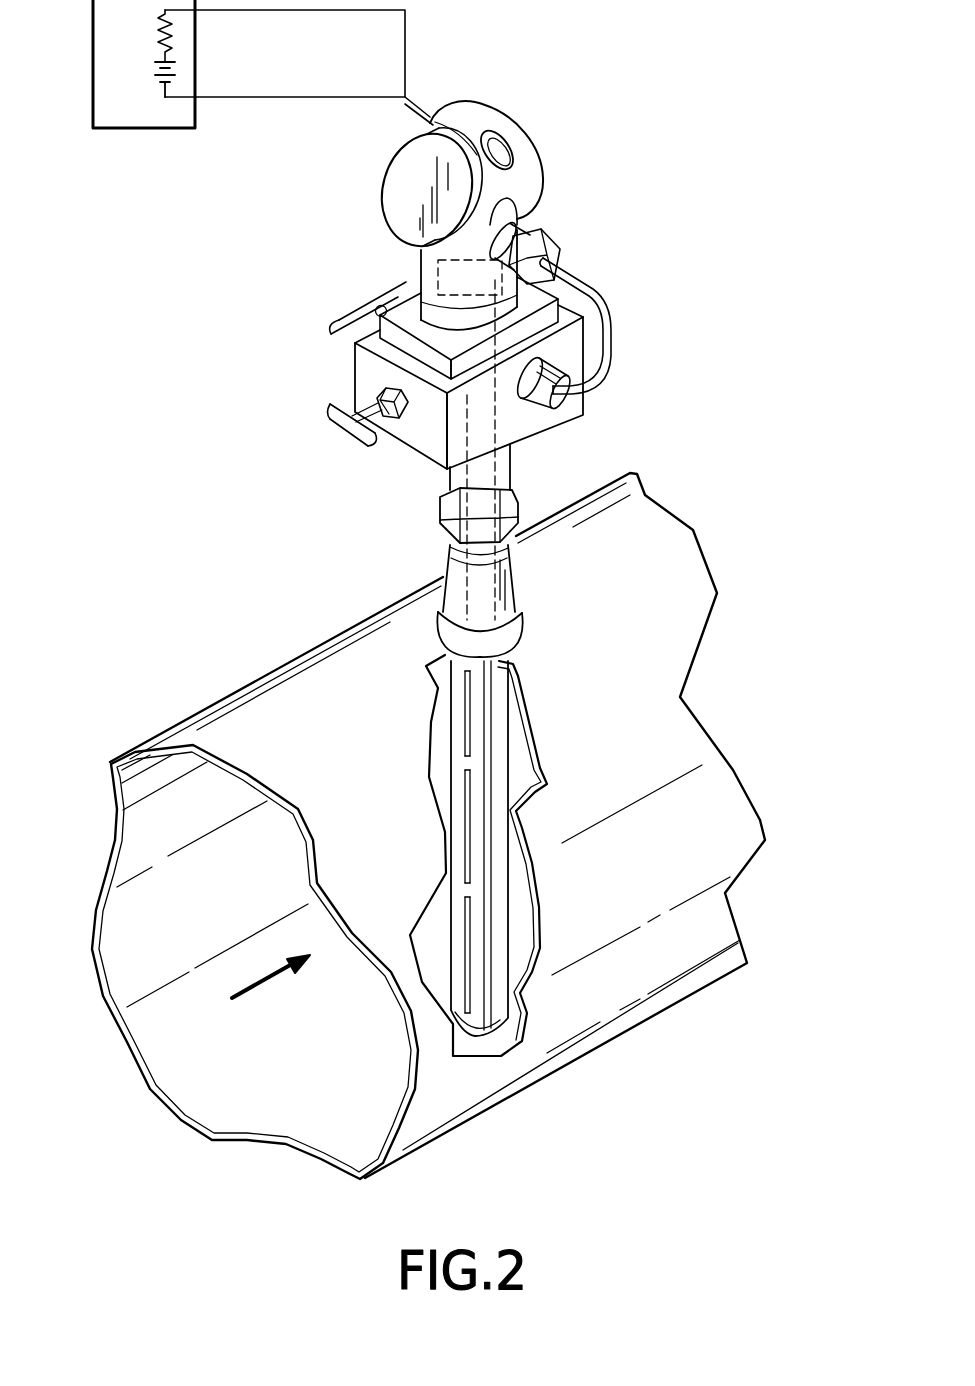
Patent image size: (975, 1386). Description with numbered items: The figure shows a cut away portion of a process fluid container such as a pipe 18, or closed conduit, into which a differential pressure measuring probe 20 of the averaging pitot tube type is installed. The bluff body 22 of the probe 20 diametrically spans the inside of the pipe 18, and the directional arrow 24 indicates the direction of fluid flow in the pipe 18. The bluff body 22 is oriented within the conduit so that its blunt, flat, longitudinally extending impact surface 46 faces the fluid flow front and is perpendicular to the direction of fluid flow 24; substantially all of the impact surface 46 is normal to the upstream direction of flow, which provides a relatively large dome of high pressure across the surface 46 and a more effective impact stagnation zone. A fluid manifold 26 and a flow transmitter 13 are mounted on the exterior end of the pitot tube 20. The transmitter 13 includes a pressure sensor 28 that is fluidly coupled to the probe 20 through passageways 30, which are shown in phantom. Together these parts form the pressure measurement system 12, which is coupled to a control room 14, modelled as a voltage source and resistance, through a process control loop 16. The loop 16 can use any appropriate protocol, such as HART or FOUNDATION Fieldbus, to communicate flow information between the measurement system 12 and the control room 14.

The pressure measurement system 12 is at (720, 60).
The flow transmitter 13 is at (527, 170).
The control room 14 is at (136, 38).
The process control loop 16 is at (257, 10).
The pipe 18 is at (113, 826).
The differential pressure measuring probe 20 is at (540, 577).
The bluff body 22 is at (432, 750).
The directional arrow 24 is at (257, 988).
The fluid manifold 26 is at (575, 352).
The pressure sensor 28 is at (447, 276).
The passageways 30 is at (497, 501).
The impact surface 46 is at (481, 1018).